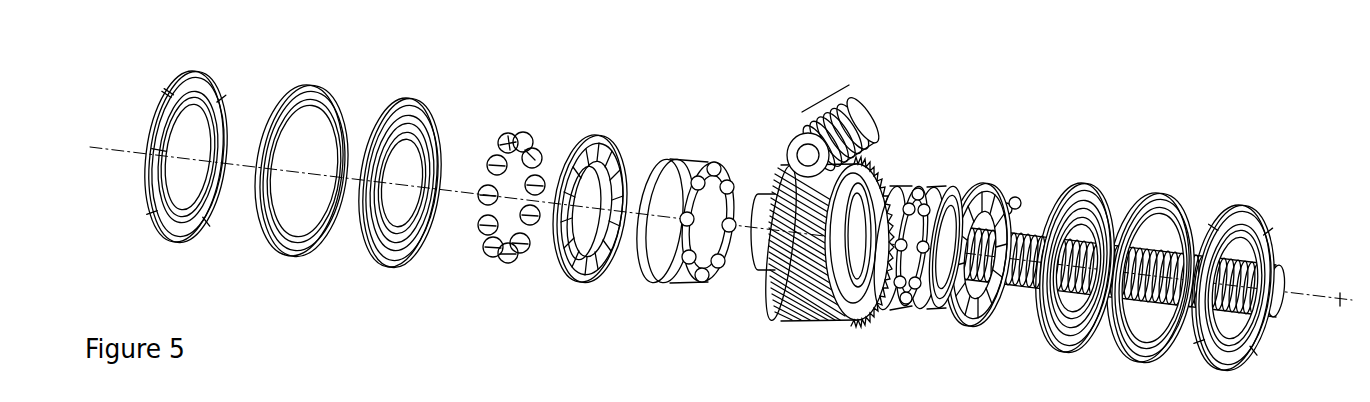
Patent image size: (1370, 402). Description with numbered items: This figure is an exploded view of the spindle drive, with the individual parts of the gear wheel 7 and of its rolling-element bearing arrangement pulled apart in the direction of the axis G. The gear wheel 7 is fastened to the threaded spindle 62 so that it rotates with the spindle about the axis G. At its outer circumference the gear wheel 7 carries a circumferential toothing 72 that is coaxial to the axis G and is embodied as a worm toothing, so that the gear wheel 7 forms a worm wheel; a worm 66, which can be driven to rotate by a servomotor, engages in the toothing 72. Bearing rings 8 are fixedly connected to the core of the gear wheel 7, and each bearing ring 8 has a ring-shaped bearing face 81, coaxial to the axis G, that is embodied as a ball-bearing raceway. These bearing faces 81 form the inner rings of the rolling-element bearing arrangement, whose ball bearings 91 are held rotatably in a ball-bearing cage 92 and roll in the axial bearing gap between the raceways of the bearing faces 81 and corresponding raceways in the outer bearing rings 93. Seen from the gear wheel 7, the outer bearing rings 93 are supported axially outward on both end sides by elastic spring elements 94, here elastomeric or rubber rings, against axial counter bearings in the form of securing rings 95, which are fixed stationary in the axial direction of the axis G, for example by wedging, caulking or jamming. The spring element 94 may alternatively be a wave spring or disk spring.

The gear wheel 7 is at (762, 290).
The bearing ring 8 is at (687, 167).
The threaded spindle 62 is at (1283, 267).
The worm 66 is at (840, 122).
The toothing 72 is at (790, 317).
The bearing face 81 is at (648, 205).
The ball bearings 91 is at (485, 185).
The ball-bearing cage 92 is at (597, 137).
The outer bearing ring 93 is at (413, 100).
The spring element 94 is at (297, 92).
The securing ring 95 is at (187, 80).
The axis G is at (1340, 300).